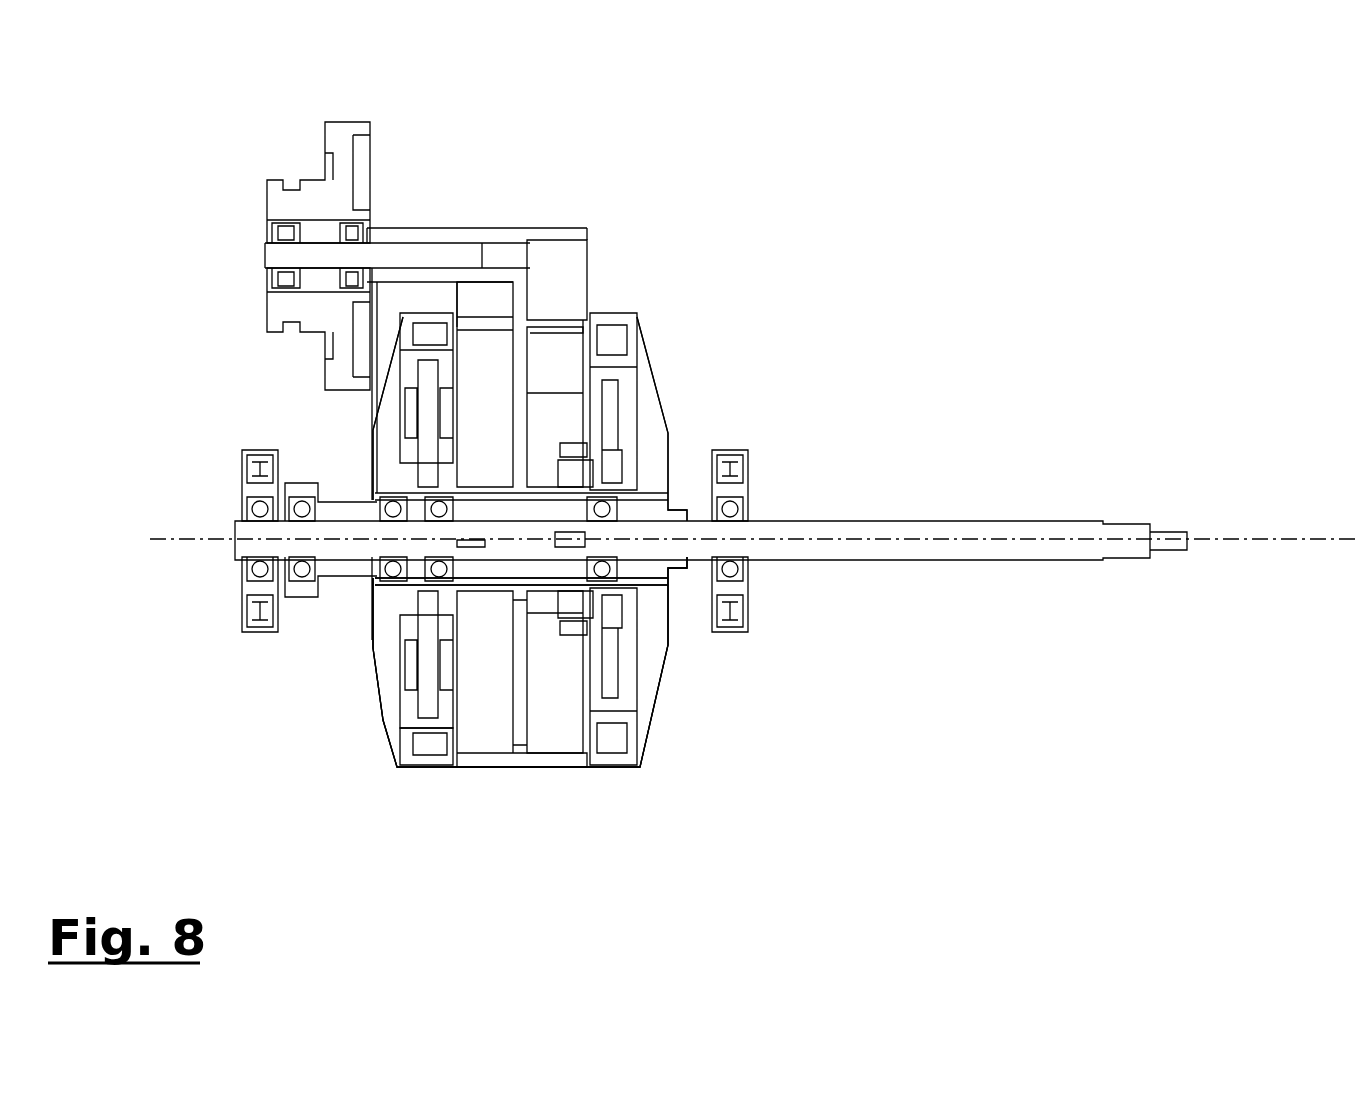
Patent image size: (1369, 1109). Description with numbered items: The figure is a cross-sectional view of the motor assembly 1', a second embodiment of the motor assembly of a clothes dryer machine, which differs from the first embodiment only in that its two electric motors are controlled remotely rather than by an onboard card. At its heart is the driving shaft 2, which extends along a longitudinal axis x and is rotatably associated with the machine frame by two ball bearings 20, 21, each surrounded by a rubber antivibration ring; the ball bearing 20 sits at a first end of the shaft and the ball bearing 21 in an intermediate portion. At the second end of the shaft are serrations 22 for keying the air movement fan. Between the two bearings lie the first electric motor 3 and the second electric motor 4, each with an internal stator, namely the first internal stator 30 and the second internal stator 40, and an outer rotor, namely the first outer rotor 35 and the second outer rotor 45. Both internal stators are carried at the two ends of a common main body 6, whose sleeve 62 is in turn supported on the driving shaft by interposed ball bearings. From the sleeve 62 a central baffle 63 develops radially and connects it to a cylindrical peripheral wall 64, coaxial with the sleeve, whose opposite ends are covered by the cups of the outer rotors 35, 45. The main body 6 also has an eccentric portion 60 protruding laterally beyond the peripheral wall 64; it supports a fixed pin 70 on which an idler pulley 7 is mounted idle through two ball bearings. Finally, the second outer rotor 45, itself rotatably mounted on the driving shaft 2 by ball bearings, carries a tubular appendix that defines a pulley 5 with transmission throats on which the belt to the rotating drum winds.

The motor assembly 1' is at (610, 421).
The driving shaft 2 is at (848, 528).
The first electric motor 3 is at (628, 292).
The second electric motor 4 is at (421, 787).
The pulley 5 is at (352, 502).
The main body 6 is at (480, 757).
The idler pulley 7 is at (298, 193).
The ball bearing 20 is at (252, 573).
The ball bearing 21 is at (723, 575).
The serrations 22 is at (1170, 548).
The first internal stator 30 is at (630, 425).
The first outer rotor 35 is at (642, 728).
The second internal stator 40 is at (417, 657).
The second outer rotor 45 is at (405, 735).
The eccentric portion 60 is at (475, 252).
The sleeve 62 is at (563, 587).
The central baffle 63 is at (520, 663).
The cylindrical peripheral wall 64 is at (545, 317).
The fixed pin 70 is at (405, 250).
The longitudinal axis x is at (1265, 522).